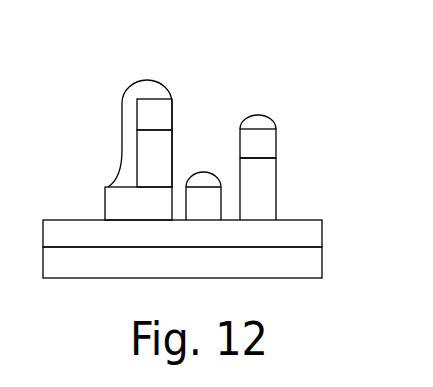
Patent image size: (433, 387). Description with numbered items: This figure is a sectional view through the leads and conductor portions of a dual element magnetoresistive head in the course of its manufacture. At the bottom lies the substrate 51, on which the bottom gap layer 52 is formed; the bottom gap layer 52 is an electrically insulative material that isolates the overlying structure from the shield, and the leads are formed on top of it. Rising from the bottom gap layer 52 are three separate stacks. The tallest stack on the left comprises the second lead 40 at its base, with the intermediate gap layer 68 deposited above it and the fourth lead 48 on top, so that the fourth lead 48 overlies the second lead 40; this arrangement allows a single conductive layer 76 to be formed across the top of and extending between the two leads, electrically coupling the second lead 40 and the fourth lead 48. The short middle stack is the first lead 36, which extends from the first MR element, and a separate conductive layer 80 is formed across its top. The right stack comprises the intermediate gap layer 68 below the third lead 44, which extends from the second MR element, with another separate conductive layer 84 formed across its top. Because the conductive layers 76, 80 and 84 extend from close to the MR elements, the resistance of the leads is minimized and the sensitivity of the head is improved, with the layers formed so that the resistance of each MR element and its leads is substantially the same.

The first lead 36 is at (215, 200).
The second lead 40 is at (118, 208).
The third lead 44 is at (268, 148).
The fourth lead 48 is at (162, 110).
The substrate 51 is at (306, 263).
The bottom gap layer 52 is at (307, 233).
The intermediate gap layer 68 is at (148, 163).
The single conductive layer 76 is at (130, 123).
The conductive layer 80 is at (202, 178).
The conductive layer 84 is at (262, 118).